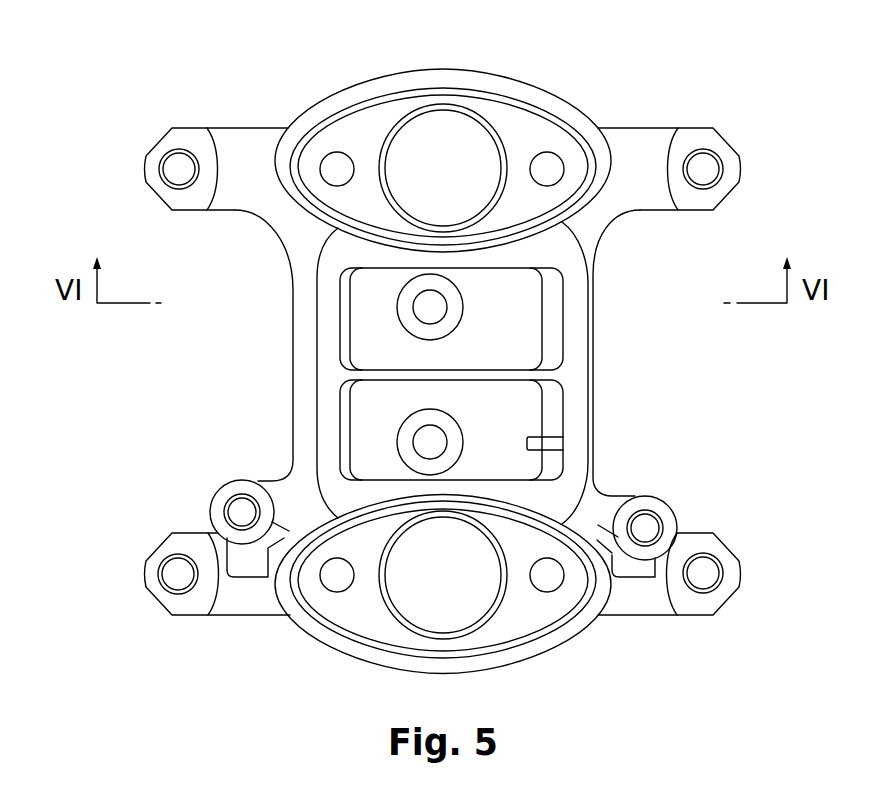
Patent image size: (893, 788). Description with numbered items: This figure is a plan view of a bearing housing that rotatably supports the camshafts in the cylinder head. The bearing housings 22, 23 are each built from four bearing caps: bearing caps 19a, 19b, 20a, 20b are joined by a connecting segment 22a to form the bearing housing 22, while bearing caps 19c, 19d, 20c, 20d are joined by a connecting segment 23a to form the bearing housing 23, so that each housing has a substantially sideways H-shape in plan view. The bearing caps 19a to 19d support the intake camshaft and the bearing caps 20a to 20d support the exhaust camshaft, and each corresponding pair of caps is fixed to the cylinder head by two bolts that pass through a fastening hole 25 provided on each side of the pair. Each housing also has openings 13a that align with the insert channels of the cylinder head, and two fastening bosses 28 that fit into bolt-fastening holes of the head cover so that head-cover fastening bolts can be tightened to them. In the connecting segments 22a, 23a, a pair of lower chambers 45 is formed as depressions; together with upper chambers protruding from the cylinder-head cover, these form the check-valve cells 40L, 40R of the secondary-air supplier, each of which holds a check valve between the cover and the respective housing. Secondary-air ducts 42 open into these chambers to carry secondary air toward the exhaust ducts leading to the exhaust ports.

The bearing housing 22 is at (443, 126).
The bearing housing 23 is at (348, 88).
The connecting segment 22a is at (400, 367).
The connecting segment 23a is at (292, 368).
The bearing cap 20a is at (220, 604).
The bearing cap 20b is at (217, 140).
The bearing cap 20c is at (232, 605).
The bearing cap 20d is at (225, 132).
The bearing cap 19a is at (669, 603).
The bearing cap 19b is at (669, 140).
The bearing cap 19c is at (630, 607).
The bearing cap 19d is at (640, 137).
The opening 13a is at (380, 169).
The fastening hole 25 is at (185, 205).
The fastening boss 28 is at (218, 502).
The secondary-air duct 42 is at (423, 440).
The lower chamber 45 is at (566, 374).
The check-valve cell 40L is at (566, 374).
The check-valve cell 40R is at (505, 337).